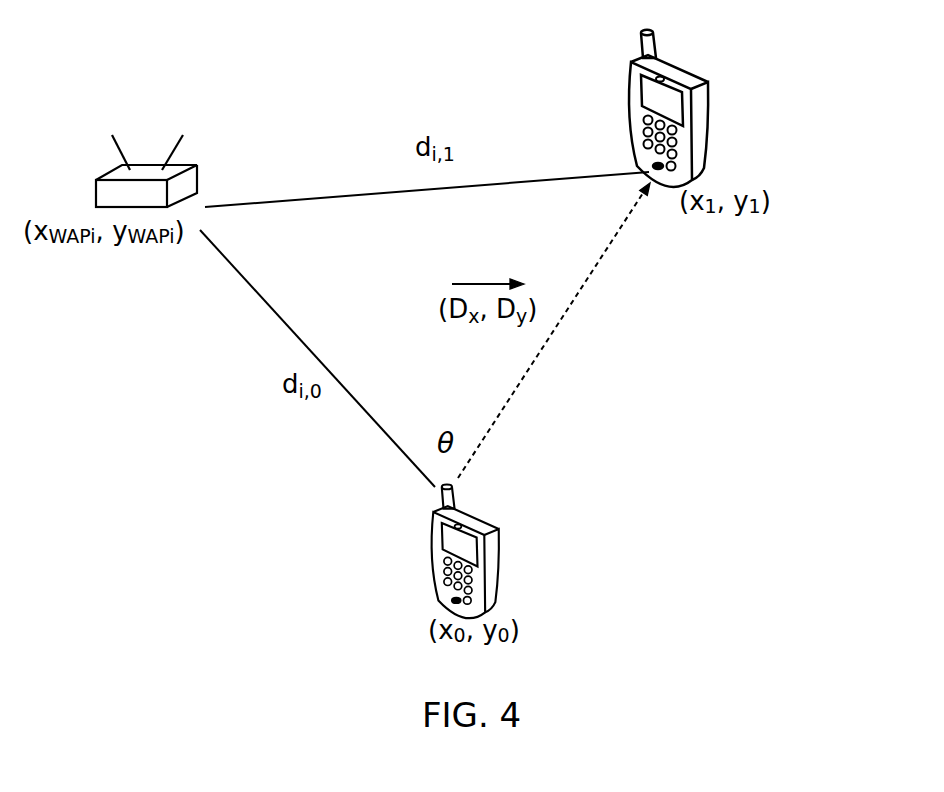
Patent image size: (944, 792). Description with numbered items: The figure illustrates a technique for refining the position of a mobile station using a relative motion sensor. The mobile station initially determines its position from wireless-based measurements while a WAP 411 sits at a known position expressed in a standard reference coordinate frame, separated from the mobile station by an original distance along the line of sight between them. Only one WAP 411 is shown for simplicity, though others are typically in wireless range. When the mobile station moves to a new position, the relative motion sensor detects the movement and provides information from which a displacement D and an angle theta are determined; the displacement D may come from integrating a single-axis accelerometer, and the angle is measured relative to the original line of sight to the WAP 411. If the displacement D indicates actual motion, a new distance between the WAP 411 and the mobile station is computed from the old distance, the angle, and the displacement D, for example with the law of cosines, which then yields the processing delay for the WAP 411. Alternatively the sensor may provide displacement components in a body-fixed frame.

The WAP 411 is at (96, 180).
The displacement D is at (554, 330).